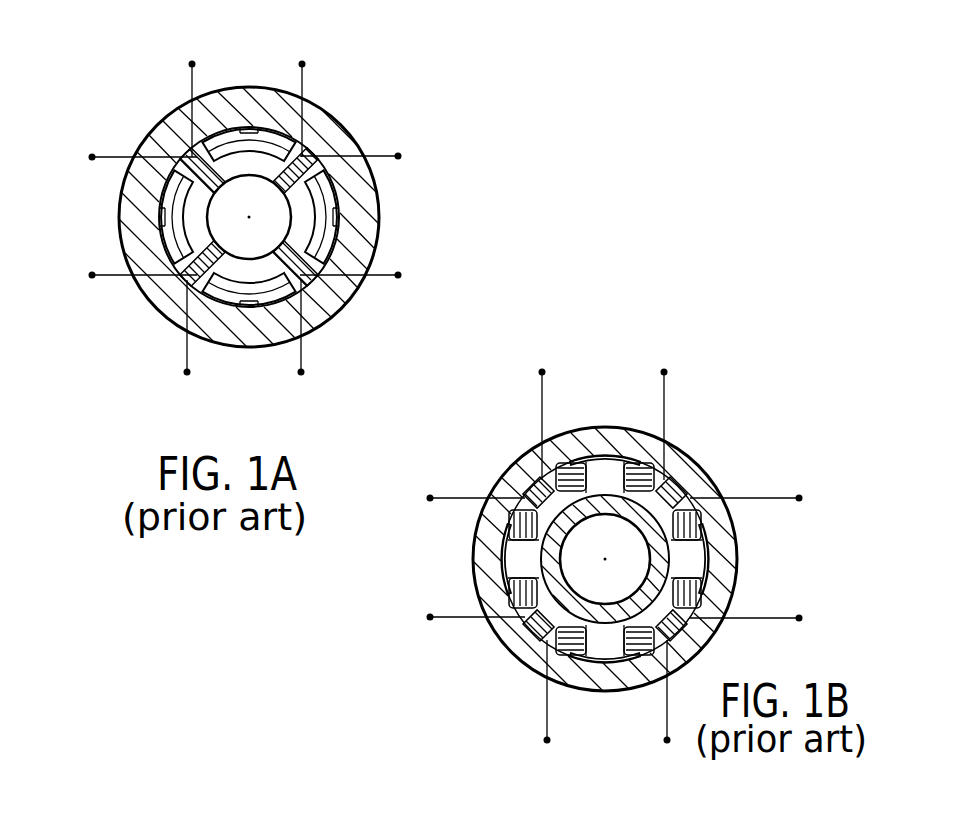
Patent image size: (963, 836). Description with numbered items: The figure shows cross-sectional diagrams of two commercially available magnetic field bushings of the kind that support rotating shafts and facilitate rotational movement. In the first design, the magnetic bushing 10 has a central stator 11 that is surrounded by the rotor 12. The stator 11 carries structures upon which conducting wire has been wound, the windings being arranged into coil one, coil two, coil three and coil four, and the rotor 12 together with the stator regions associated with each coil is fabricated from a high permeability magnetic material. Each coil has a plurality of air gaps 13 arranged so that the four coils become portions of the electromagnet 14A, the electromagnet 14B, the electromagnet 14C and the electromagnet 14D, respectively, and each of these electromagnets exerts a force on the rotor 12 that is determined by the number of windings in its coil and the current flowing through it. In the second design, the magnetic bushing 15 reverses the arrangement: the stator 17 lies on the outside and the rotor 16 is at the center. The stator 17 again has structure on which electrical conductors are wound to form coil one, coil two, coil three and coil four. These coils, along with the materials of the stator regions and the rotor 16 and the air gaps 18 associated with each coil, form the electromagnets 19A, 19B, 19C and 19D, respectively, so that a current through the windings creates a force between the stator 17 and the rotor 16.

In FIG. 1A, the magnetic bushing 10 is at (363, 314).
In FIG. 1A, the stator 11 is at (273, 193).
In FIG. 1A, the rotor 12 is at (153, 308).
In FIG. 1A, the air gaps 13 is at (184, 161).
In FIG. 1A, the electromagnet 14A is at (317, 383).
In FIG. 1A, the electromagnet 14B is at (424, 137).
In FIG. 1A, the electromagnet 14C is at (318, 51).
In FIG. 1A, the electromagnet 14D is at (73, 147).
In FIG. 1B, the magnetic bushing 15 is at (754, 641).
In FIG. 1B, the rotor 16 is at (618, 600).
In FIG. 1B, the stator 17 is at (673, 455).
In FIG. 1B, the air gaps 18 is at (571, 527).
In FIG. 1B, the electromagnet 19A is at (688, 747).
In FIG. 1B, the electromagnet 19B is at (802, 478).
In FIG. 1B, the electromagnet 19C is at (680, 363).
In FIG. 1B, the electromagnet 19D is at (423, 483).